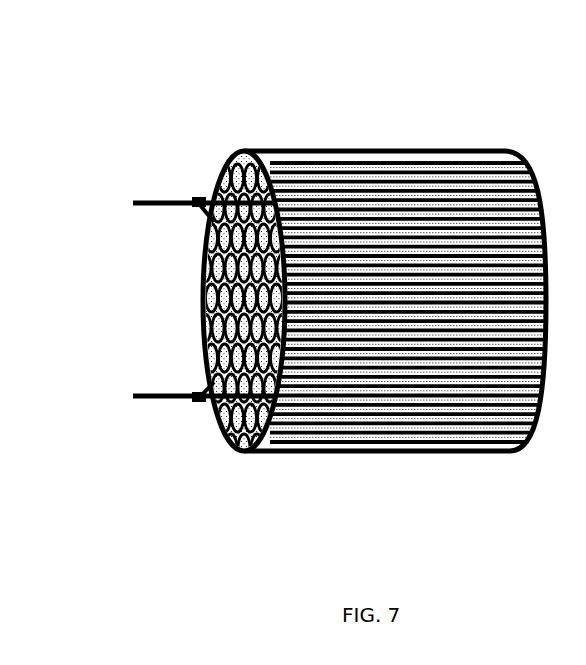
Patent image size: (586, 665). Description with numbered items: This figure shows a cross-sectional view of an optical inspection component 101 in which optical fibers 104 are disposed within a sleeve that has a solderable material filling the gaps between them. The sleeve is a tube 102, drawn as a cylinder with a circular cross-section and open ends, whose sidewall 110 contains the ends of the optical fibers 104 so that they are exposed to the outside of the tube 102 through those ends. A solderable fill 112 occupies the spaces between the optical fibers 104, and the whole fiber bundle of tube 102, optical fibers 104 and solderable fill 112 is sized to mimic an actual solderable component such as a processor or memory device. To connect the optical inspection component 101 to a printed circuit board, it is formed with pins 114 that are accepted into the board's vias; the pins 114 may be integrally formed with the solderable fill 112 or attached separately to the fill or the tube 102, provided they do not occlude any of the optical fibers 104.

The optical inspection component 101 is at (254, 70).
The tube 102 is at (247, 455).
The optical fibers 104 is at (222, 183).
The sidewall 110 is at (448, 405).
The solderable fill 112 is at (223, 440).
The pins 114 is at (133, 394).